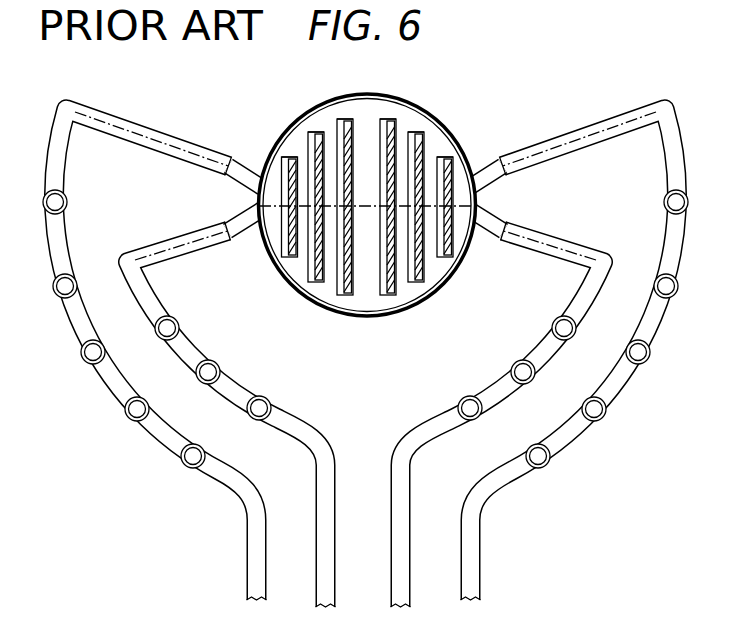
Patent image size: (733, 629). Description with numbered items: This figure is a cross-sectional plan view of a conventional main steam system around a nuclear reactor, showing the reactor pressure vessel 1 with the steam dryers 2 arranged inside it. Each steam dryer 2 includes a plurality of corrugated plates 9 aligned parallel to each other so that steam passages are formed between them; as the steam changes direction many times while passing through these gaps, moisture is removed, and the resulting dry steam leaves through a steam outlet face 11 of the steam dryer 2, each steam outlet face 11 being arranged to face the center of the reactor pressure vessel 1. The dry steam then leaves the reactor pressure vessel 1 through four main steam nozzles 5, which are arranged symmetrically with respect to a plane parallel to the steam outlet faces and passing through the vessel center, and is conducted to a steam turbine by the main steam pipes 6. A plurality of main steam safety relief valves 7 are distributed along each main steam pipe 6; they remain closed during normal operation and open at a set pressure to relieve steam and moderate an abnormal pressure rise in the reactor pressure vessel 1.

The reactor pressure vessel 1 is at (385, 92).
The steam dryer 2 is at (281, 256).
The main steam nozzle 5 is at (242, 154).
The main steam pipe 6 is at (121, 117).
The main steam safety relief valve 7 is at (46, 213).
The corrugated plate 9 is at (285, 157).
The steam outlet face 11 is at (291, 257).